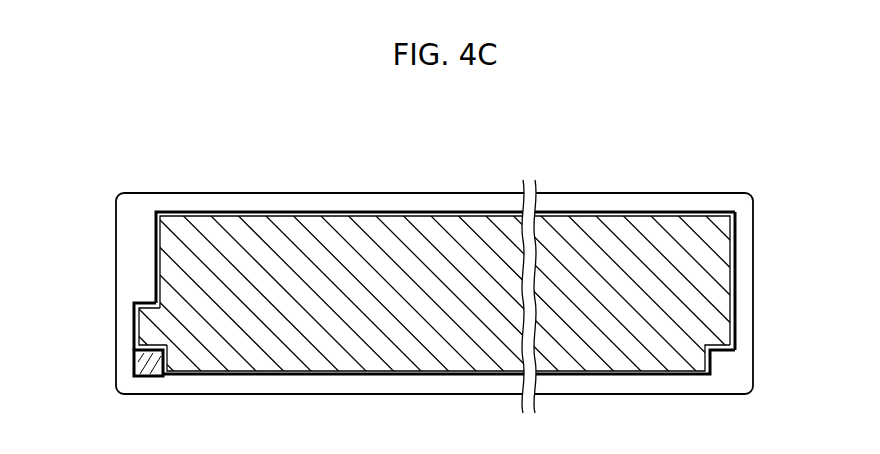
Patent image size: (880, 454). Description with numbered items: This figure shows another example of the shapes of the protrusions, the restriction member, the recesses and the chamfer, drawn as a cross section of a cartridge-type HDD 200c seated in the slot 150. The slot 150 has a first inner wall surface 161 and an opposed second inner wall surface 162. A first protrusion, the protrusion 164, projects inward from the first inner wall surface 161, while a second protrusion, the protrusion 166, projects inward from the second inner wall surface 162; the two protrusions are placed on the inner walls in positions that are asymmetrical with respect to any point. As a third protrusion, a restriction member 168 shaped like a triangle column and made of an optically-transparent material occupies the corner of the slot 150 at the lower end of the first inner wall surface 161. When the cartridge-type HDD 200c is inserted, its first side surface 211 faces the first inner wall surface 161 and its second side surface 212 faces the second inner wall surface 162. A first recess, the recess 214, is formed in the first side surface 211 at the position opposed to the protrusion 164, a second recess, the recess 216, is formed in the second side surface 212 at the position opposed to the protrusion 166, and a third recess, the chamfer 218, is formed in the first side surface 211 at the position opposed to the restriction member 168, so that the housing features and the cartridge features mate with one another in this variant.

The slot 150 is at (427, 183).
The first inner wall surface 161 is at (156, 240).
The second inner wall surface 162 is at (736, 229).
The protrusion 164 is at (140, 293).
The protrusion 166 is at (722, 361).
The restriction member 168 is at (143, 377).
The cartridge-type HDD 200c is at (407, 345).
The first side surface 211 is at (168, 237).
The second side surface 212 is at (720, 230).
The recess 214 is at (141, 314).
The recess 216 is at (699, 357).
The chamfer 218 is at (167, 370).